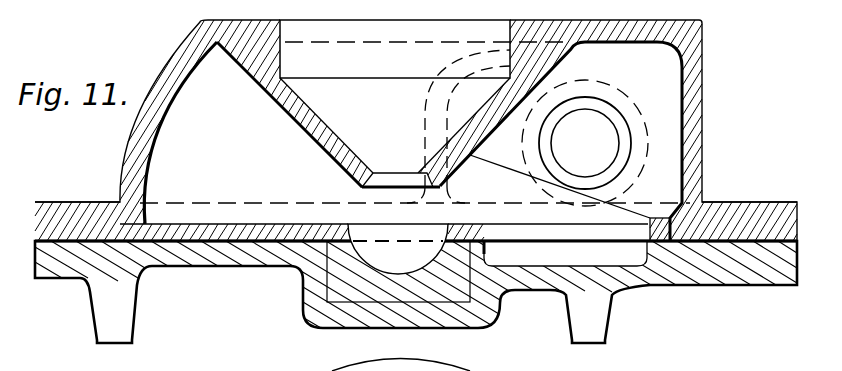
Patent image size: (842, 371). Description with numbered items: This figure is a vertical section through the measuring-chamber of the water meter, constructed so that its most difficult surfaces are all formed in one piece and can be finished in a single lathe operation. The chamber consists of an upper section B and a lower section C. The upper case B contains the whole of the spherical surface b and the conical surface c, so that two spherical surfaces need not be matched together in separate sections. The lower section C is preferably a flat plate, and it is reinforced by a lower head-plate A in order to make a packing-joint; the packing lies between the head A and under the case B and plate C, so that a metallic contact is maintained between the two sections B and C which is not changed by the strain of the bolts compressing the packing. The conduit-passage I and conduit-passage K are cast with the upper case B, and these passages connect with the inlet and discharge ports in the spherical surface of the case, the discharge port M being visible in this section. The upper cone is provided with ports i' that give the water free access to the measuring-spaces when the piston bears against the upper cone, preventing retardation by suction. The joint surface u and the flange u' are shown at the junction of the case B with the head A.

The lower head-plate A is at (416, 292).
The upper case section B is at (416, 130).
The spherical surface b is at (180, 133).
The conical surface c is at (433, 130).
The conduit-passage I is at (423, 111).
The discharge port M is at (415, 141).
The conduit-passage K is at (585, 143).
The lower section plate C is at (398, 263).
The ports in upper cone i' is at (565, 254).
The joint face between housing and base u is at (410, 235).
The flange of housing u' is at (416, 203).